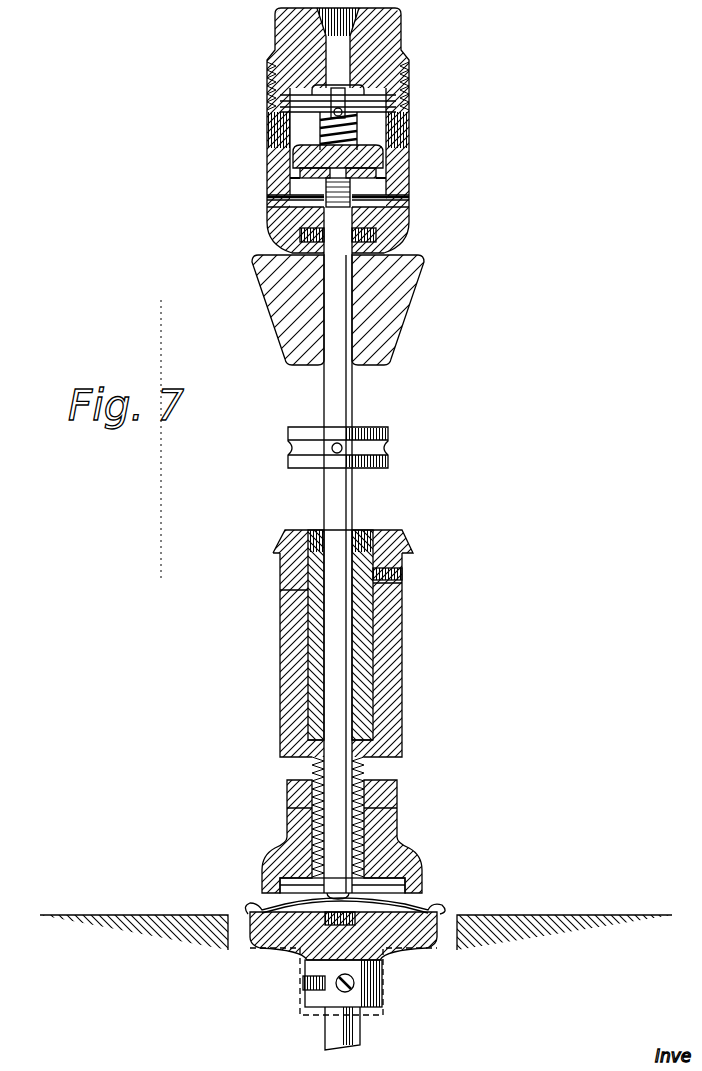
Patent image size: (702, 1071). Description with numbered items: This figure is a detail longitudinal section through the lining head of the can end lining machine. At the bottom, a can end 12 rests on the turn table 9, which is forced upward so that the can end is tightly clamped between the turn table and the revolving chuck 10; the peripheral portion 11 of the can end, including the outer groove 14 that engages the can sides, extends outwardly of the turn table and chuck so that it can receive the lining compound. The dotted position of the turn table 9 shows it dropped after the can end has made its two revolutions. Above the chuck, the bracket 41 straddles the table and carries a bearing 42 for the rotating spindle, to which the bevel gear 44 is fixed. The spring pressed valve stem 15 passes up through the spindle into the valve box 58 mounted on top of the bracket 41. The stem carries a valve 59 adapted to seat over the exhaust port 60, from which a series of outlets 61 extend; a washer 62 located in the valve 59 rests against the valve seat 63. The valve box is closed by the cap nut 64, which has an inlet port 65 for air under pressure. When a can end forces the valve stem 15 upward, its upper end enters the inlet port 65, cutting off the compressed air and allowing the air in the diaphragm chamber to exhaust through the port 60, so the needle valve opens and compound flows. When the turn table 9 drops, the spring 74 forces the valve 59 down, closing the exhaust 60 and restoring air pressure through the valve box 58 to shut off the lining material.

The inlet port 65 is at (340, 42).
The cap nut 64 is at (378, 68).
The spring 74 is at (350, 127).
The valve box 58 is at (400, 145).
The washer 62 is at (376, 175).
The exhaust port 60 is at (353, 197).
The outlets 61 is at (400, 222).
The valve 59 is at (300, 160).
The valve seat 63 is at (290, 203).
The bracket 41 is at (393, 310).
The valve stem 15 is at (343, 515).
The bevel gear 44 is at (287, 548).
The bearing 42 is at (387, 672).
The revolving chuck 10 is at (280, 860).
The can end 12 is at (283, 898).
The peripheral portion 11 is at (440, 905).
The outer groove 14 is at (356, 916).
The turn table 9 is at (380, 932).